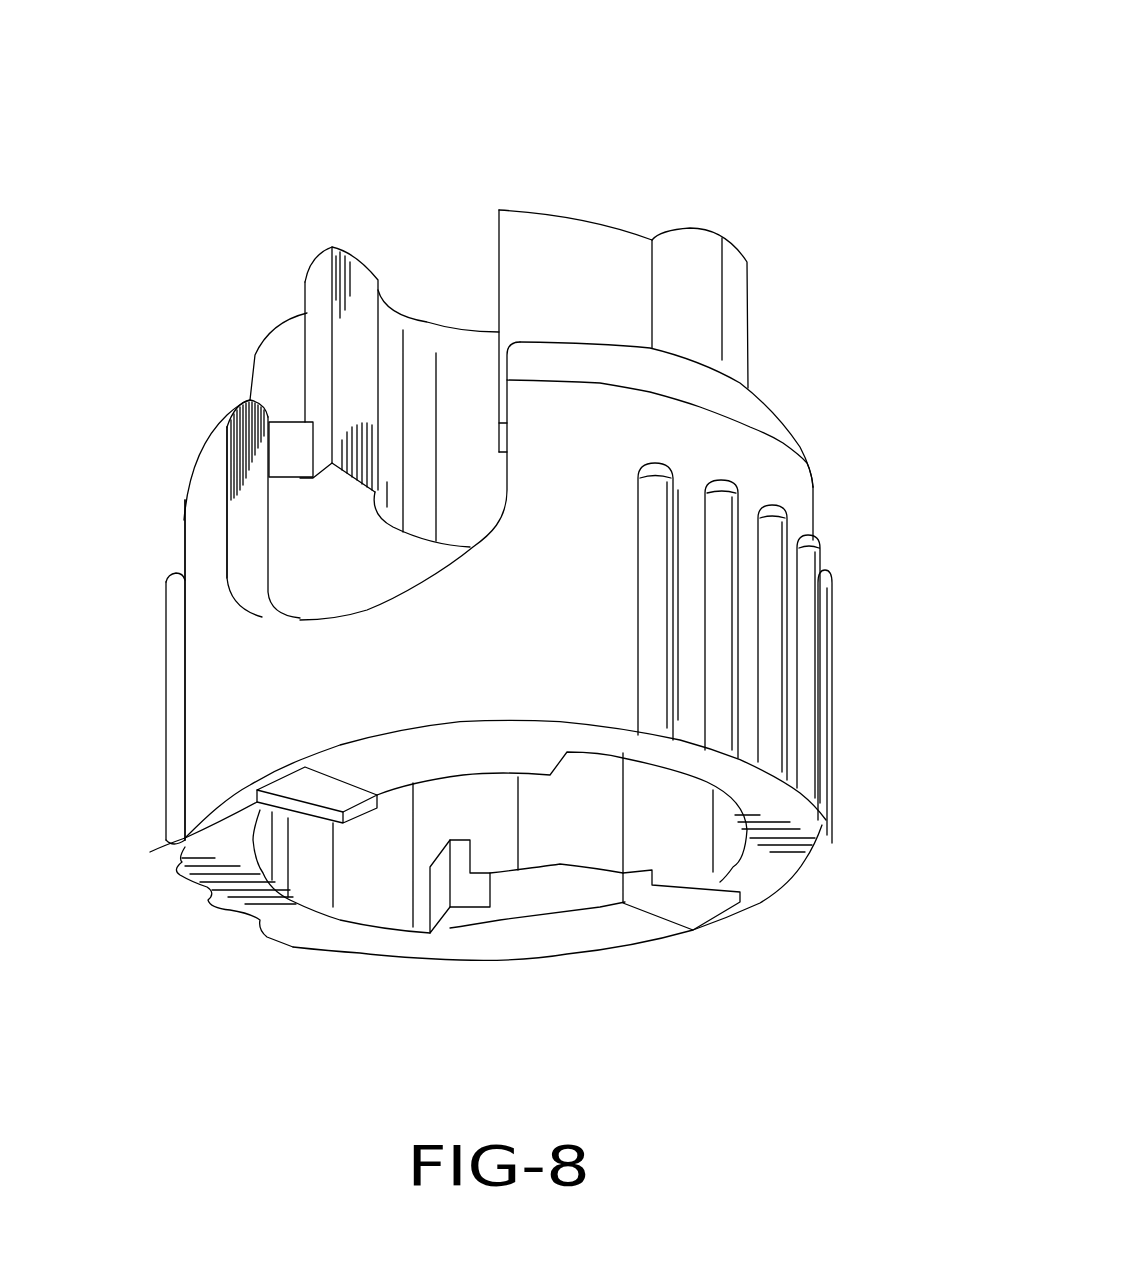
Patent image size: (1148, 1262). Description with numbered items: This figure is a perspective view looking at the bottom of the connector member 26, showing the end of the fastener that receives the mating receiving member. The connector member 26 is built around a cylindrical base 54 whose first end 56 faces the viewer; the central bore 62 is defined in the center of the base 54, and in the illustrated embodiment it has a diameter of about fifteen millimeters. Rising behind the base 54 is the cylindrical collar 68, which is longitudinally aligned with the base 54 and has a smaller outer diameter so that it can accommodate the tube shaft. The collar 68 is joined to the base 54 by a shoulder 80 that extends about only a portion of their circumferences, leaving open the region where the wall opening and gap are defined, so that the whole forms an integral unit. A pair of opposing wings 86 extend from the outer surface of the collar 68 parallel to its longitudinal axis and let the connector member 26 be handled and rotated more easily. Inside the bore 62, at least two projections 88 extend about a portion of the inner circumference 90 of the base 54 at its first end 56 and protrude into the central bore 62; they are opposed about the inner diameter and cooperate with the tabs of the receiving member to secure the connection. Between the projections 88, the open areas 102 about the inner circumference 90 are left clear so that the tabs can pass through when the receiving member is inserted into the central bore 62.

The connector member 26 is at (497, 516).
The cylindrical base 54 is at (198, 622).
The first end 56 is at (262, 763).
The central bore 62 is at (578, 800).
The cylindrical collar 68 is at (623, 307).
The shoulder 80 is at (292, 445).
The wings 86 is at (700, 258).
The projections 88 is at (513, 897).
The inner circumference 90 is at (670, 770).
The open areas 102 is at (320, 843).